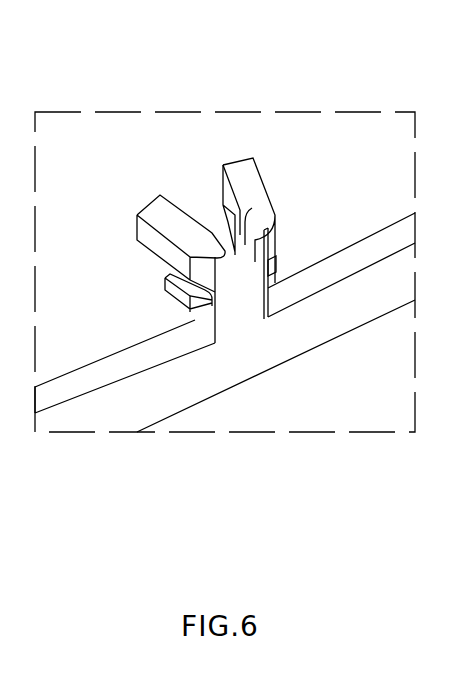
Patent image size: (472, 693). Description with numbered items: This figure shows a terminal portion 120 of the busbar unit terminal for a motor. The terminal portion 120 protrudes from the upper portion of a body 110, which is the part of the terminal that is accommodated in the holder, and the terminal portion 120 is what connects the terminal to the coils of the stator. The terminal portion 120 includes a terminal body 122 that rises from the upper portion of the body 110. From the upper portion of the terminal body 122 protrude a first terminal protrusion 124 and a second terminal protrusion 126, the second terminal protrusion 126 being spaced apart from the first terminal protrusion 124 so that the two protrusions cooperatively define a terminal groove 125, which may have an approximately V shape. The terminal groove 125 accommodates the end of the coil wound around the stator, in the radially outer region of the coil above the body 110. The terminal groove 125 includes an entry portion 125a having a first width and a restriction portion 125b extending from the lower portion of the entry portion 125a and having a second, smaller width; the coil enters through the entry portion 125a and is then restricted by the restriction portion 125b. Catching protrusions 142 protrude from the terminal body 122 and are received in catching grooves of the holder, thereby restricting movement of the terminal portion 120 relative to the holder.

The body 110 is at (112, 410).
The terminal portion 120 is at (131, 253).
The terminal body 122 is at (245, 312).
The first terminal protrusion 124 is at (271, 152).
The terminal groove 125 is at (250, 133).
The entry portion 125a is at (250, 210).
The restriction portion 125b is at (243, 220).
The second terminal protrusion 126 is at (158, 237).
The catching protrusion 142 is at (173, 297).